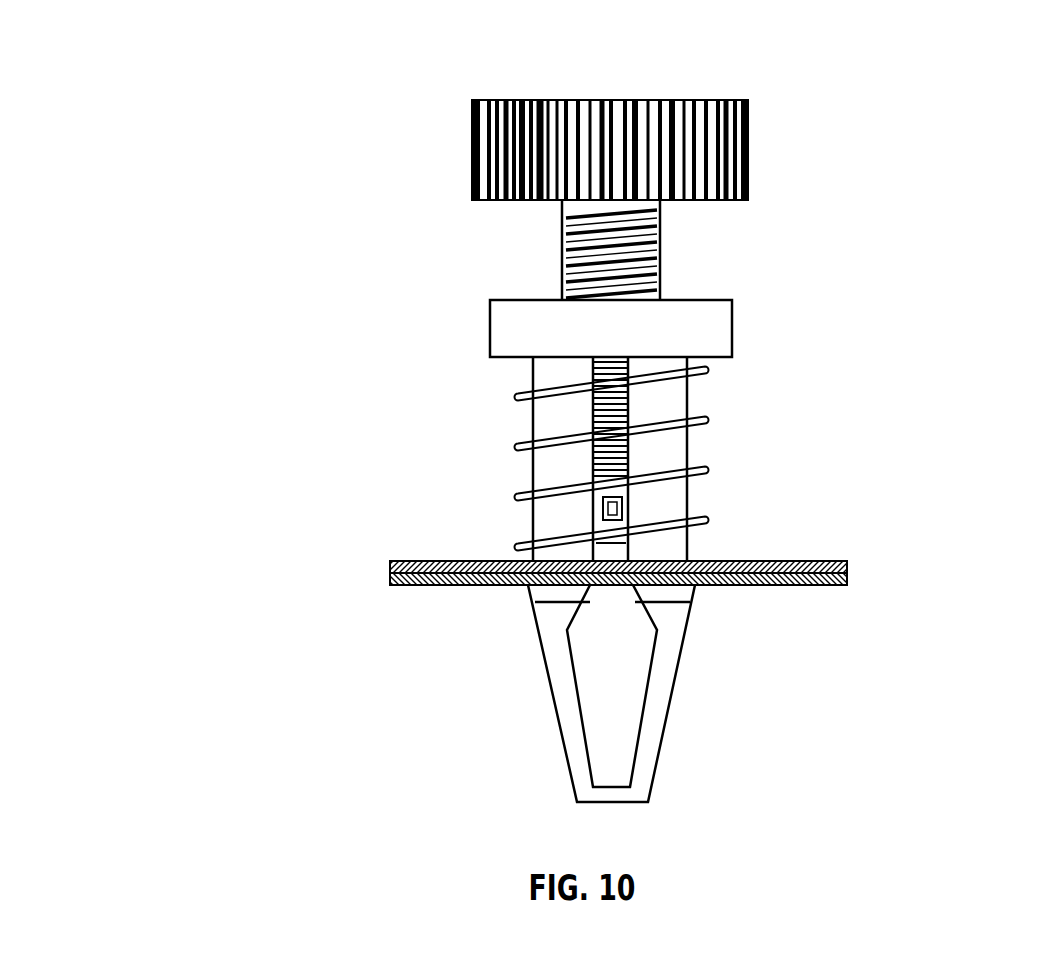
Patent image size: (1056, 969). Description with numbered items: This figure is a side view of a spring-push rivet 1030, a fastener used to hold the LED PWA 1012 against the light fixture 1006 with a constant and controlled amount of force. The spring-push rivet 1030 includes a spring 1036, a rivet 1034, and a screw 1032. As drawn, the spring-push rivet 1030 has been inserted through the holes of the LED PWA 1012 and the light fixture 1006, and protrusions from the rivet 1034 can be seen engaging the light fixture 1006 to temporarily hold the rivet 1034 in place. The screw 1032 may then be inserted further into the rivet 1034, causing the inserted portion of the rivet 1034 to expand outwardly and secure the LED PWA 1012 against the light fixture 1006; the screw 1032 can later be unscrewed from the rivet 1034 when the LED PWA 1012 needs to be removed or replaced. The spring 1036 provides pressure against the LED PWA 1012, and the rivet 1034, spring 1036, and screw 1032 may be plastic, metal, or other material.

The spring-push rivet 1030 is at (205, 183).
The screw 1032 is at (740, 122).
The rivet 1034 is at (718, 322).
The spring 1036 is at (705, 420).
The LED PWA 1012 is at (845, 565).
The light fixture 1006 is at (845, 580).